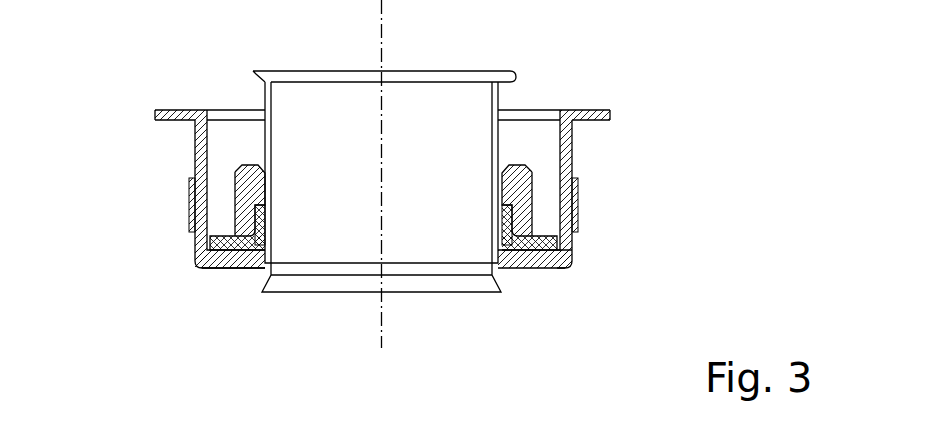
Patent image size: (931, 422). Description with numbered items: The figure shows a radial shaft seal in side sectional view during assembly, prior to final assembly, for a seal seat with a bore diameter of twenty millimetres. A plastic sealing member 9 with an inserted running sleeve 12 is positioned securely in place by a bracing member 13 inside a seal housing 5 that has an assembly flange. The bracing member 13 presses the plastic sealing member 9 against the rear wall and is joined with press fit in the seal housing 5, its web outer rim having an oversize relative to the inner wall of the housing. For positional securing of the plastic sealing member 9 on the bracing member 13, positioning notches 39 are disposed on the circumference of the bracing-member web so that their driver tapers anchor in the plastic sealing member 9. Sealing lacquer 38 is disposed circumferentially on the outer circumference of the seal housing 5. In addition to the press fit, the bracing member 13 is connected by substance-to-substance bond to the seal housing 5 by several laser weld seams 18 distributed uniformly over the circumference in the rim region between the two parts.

The seal housing 5 is at (574, 160).
The plastic sealing member 9 is at (212, 268).
The running sleeve 12 is at (498, 93).
The bracing member 13 is at (228, 228).
The weld seams 18 is at (193, 242).
The sealing lacquer 38 is at (575, 207).
The positioning notches 39 is at (572, 262).